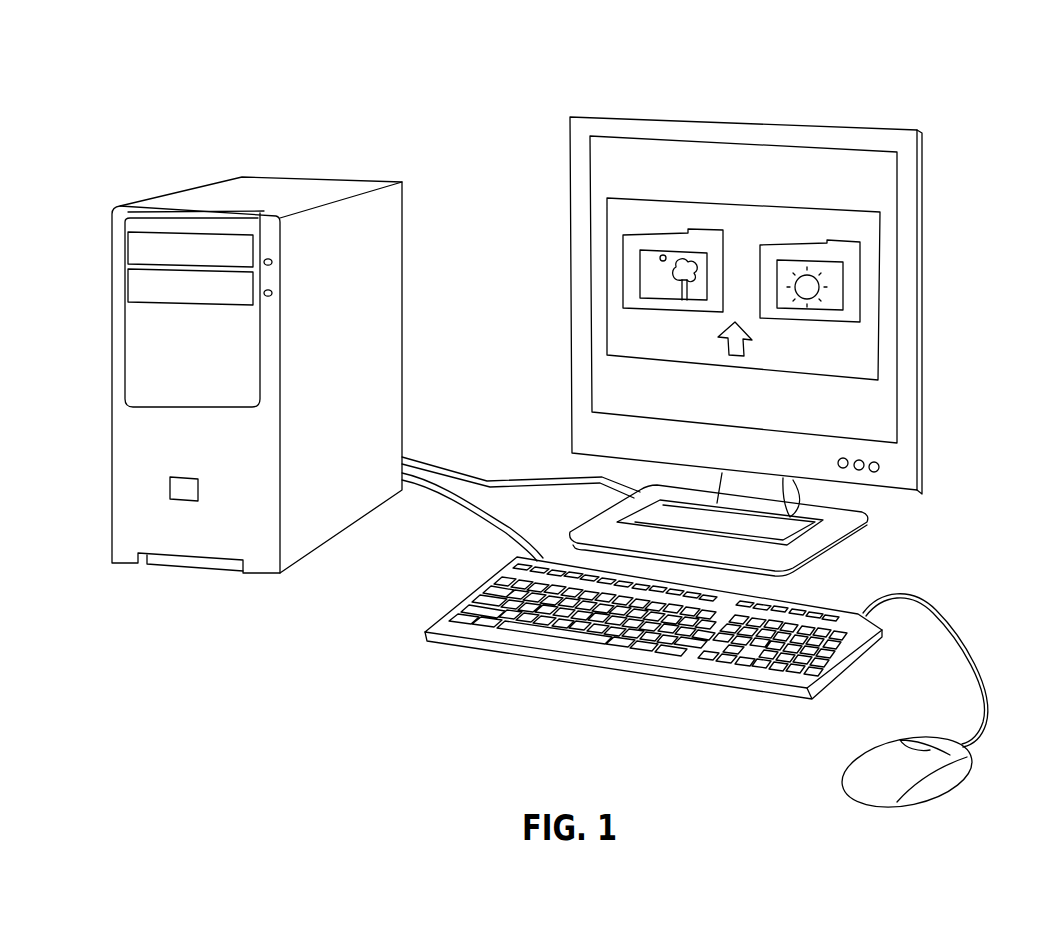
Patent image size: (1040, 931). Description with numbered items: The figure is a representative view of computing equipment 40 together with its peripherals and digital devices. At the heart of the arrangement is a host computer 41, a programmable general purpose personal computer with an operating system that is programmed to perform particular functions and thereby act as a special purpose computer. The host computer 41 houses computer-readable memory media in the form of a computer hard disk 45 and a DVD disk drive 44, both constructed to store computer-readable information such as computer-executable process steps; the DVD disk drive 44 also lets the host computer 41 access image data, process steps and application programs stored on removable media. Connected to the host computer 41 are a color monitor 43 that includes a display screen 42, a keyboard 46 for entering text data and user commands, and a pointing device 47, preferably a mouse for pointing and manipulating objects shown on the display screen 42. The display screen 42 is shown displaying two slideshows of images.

The computing equipment 40 is at (914, 80).
The host computer 41 is at (320, 178).
The display screen 42 is at (885, 325).
The color monitor 43 is at (785, 123).
The DVD disk drive 44 is at (128, 281).
The computer hard disk 45 is at (128, 246).
The keyboard 46 is at (518, 645).
The pointing device 47 is at (943, 778).